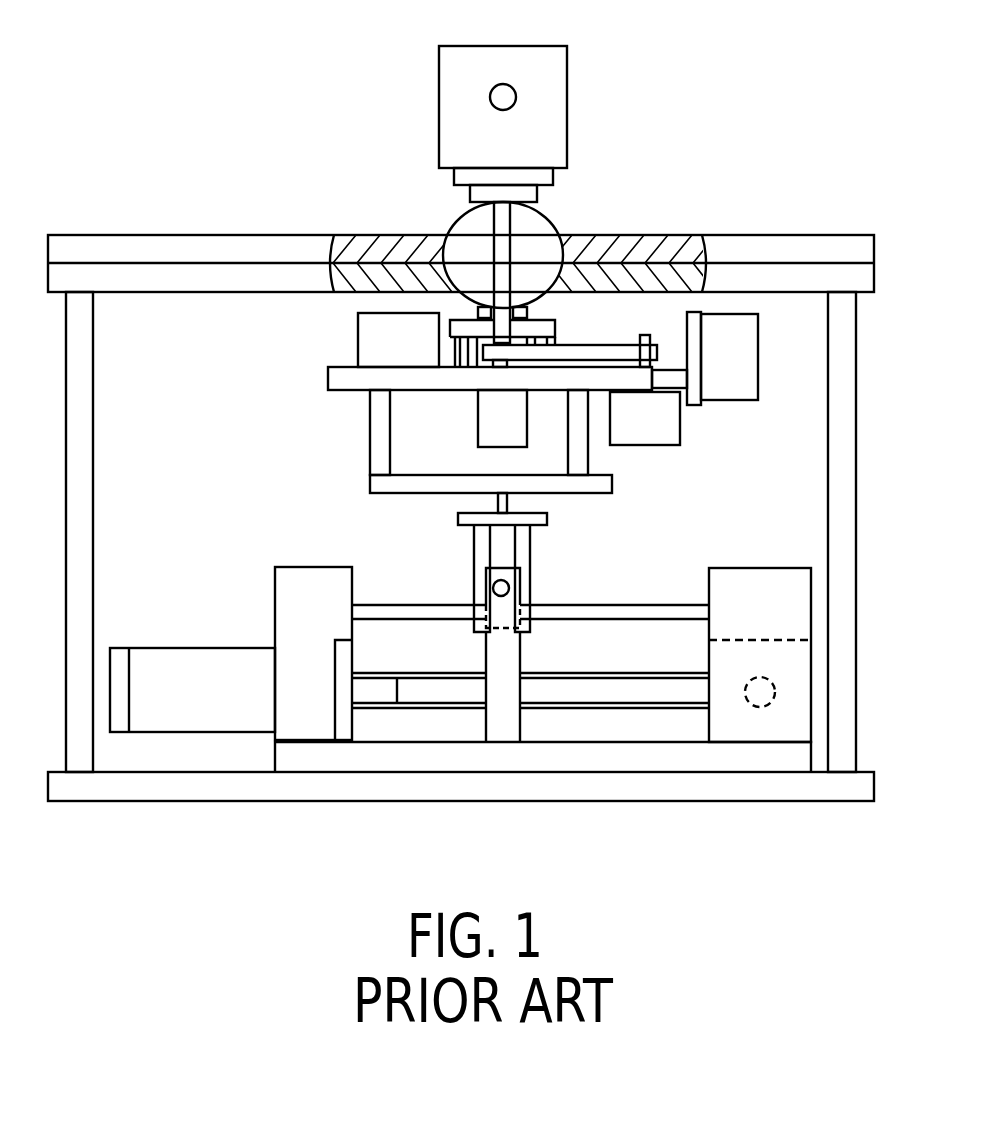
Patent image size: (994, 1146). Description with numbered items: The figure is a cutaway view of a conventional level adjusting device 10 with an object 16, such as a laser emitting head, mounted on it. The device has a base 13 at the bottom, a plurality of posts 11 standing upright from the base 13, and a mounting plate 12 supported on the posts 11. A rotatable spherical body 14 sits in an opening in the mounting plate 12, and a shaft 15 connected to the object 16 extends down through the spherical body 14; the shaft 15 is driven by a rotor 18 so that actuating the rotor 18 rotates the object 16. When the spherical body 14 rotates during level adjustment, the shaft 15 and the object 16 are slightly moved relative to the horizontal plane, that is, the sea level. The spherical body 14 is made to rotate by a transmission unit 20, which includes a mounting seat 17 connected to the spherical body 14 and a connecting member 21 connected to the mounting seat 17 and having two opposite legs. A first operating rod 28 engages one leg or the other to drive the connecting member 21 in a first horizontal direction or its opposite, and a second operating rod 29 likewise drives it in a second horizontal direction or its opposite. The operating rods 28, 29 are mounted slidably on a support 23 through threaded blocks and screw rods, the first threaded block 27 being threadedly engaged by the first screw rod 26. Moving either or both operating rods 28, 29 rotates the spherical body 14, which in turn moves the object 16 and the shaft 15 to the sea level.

The level adjusting device 10 is at (210, 162).
The posts 11 is at (857, 317).
The mounting plate 12 is at (793, 236).
The base 13 is at (818, 790).
The spherical body 14 is at (546, 213).
The shaft 15 is at (504, 246).
The object 16 is at (443, 108).
The mounting seat 17 is at (590, 455).
The rotor 18 is at (673, 417).
The transmission unit 20 is at (541, 545).
The connecting member 21 is at (460, 517).
The support 23 is at (610, 765).
The first screw rod 26 is at (213, 718).
The first threaded block 27 is at (497, 728).
The first operating rod 28 is at (509, 588).
The second operating rod 29 is at (673, 610).